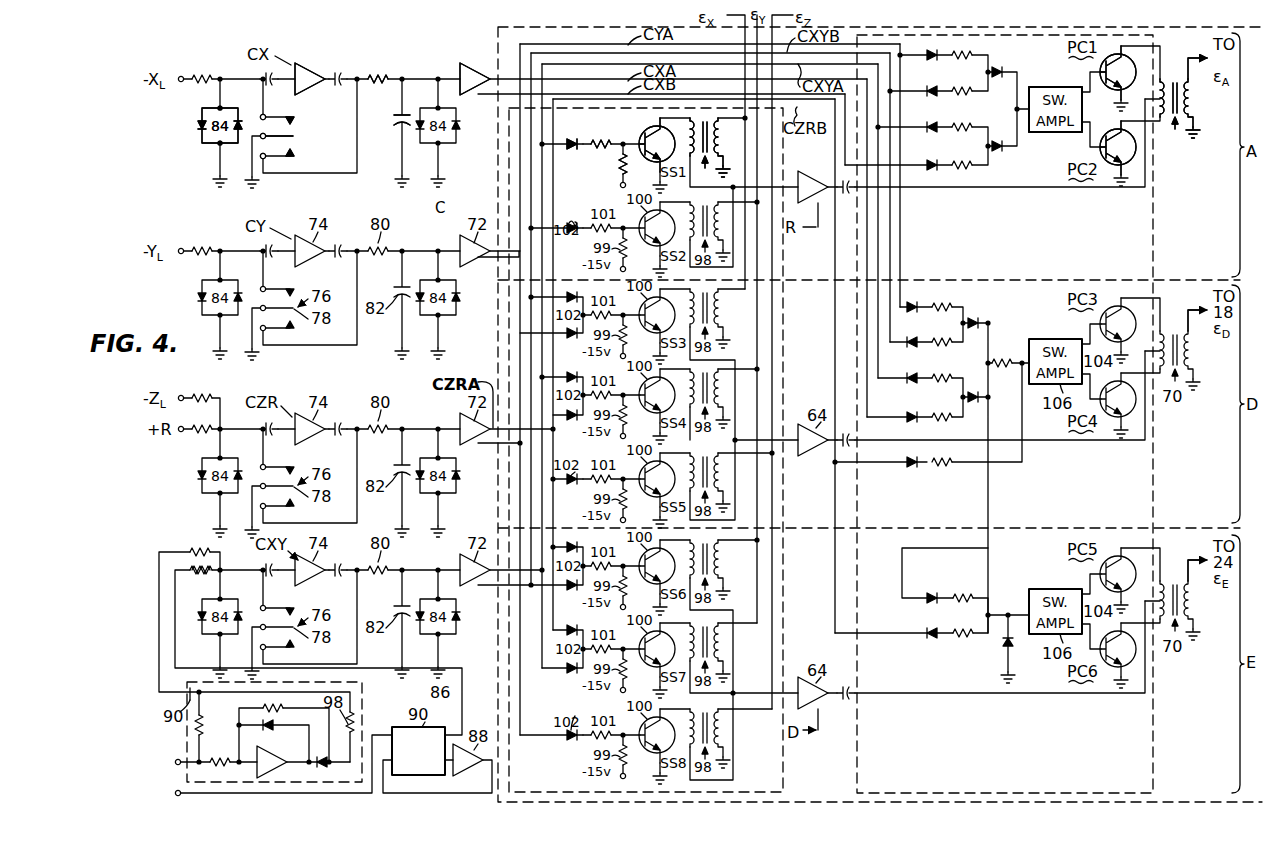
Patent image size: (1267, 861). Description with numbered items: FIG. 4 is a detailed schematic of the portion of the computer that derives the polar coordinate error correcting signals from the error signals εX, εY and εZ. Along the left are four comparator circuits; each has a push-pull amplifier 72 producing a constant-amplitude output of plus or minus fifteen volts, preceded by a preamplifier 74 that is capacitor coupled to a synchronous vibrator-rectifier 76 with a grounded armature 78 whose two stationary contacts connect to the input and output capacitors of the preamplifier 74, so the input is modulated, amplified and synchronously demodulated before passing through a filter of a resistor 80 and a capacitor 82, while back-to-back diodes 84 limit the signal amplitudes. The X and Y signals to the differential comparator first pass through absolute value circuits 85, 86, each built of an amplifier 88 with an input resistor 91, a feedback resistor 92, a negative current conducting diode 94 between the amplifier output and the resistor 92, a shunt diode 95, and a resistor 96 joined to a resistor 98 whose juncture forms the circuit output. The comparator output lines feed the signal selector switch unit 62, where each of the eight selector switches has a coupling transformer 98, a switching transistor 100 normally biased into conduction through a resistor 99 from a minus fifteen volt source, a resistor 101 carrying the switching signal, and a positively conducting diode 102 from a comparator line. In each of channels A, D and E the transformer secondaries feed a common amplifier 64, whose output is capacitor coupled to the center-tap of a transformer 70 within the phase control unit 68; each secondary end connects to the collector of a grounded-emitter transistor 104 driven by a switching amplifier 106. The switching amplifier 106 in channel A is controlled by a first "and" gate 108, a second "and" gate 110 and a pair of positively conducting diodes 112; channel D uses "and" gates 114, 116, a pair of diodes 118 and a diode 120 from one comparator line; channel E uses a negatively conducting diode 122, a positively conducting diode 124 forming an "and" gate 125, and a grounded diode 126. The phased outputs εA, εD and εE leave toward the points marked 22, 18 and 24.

The output to deflection yoke D 18 is at (1194, 320).
The output to deflection yoke A 22 is at (1210, 65).
The output to deflection yoke E 24 is at (1194, 570).
The signal selector switch unit 62 is at (783, 776).
The amplifier 64 is at (821, 168).
The phase control unit 68 is at (1150, 776).
The transformer 70 is at (1180, 116).
The amplifier 72 is at (474, 71).
The preamplifier 74 is at (313, 70).
The synchronous vibrator-rectifier 76 is at (298, 135).
The grounded armature 78 is at (294, 137).
The resistor 80 is at (378, 71).
The capacitor 82 is at (398, 123).
The diodes 84 is at (220, 125).
The absolute value circuit 85 is at (183, 737).
The absolute value circuit 86 is at (454, 724).
The amplifier 88 is at (283, 772).
The amplifier input resistor 91 is at (212, 760).
The amplifier feedback resistor 92 is at (275, 706).
The negative current conducting diode 94 is at (323, 765).
The diode 95 is at (276, 723).
The resistor 96 is at (202, 732).
The coupling transformer 98 is at (710, 151).
The resistor 99 is at (620, 166).
The switching transistor 100 is at (647, 128).
The resistor 101 is at (603, 135).
The diode element 102 is at (575, 136).
The transistor 104 is at (1109, 110).
The switching amplifier 106 is at (1060, 132).
The first "and" gate 108 is at (949, 73).
The second "and" gate 110 is at (949, 146).
The diodes 112 is at (998, 136).
The first "and" gate 114 is at (929, 324).
The second "and" gate 116 is at (929, 397).
The diodes 118 is at (974, 391).
The diode 120 is at (912, 468).
The negatively conducting diode 122 is at (934, 638).
The positively conducting diode 124 is at (934, 593).
The "and" gate 125 is at (957, 615).
The negatively conducting diode 126 is at (1003, 647).